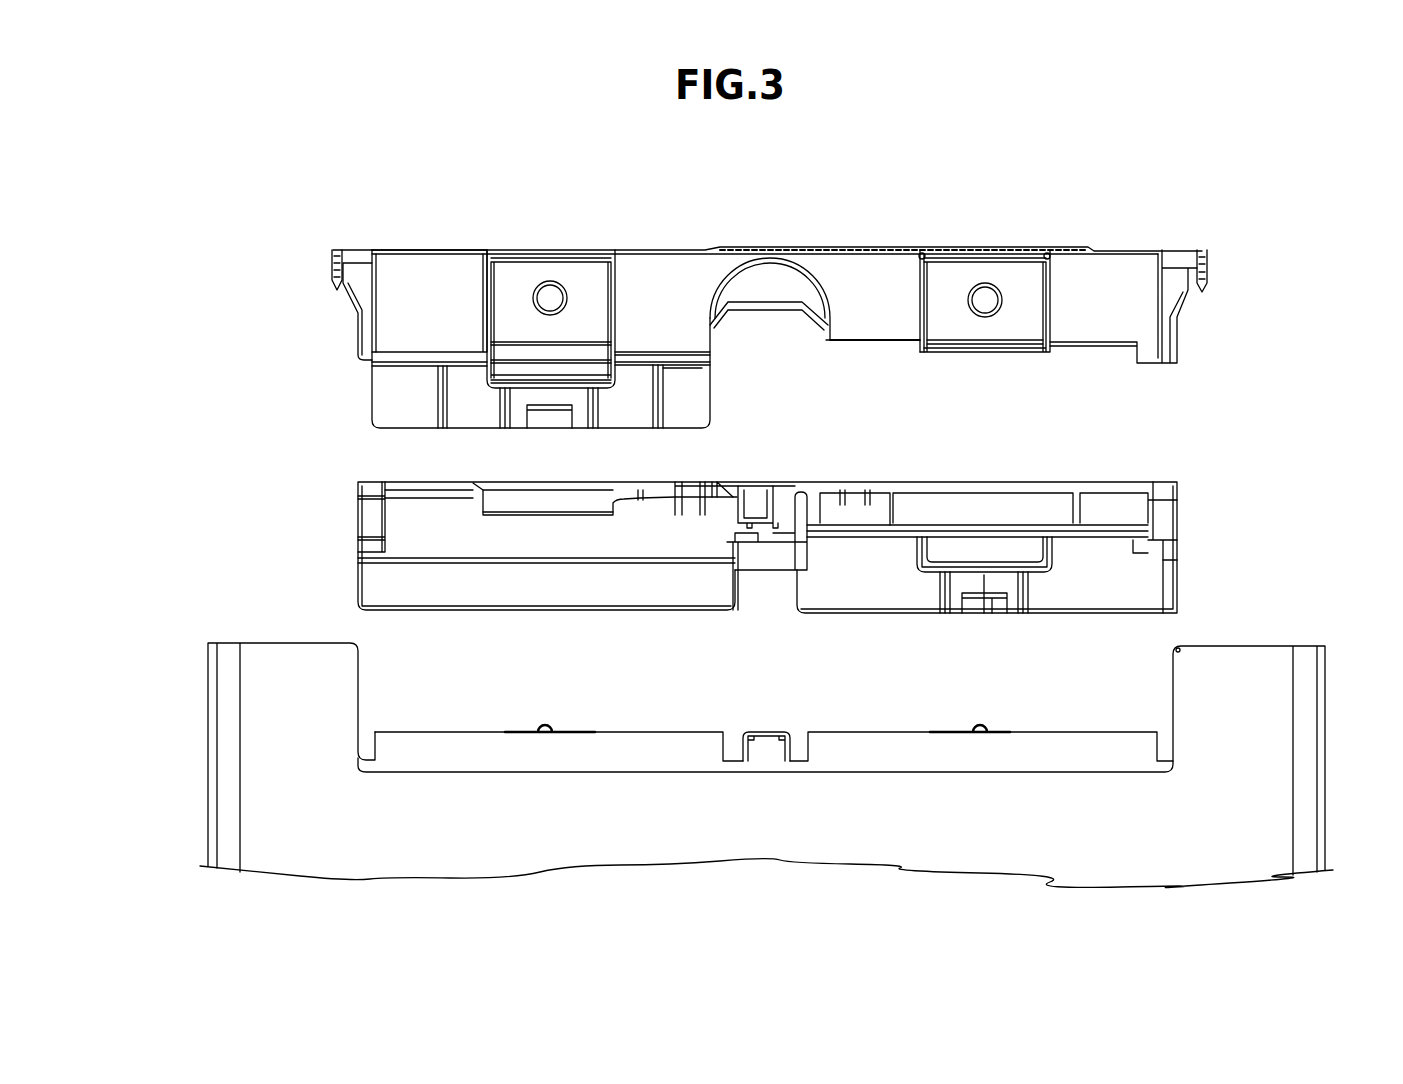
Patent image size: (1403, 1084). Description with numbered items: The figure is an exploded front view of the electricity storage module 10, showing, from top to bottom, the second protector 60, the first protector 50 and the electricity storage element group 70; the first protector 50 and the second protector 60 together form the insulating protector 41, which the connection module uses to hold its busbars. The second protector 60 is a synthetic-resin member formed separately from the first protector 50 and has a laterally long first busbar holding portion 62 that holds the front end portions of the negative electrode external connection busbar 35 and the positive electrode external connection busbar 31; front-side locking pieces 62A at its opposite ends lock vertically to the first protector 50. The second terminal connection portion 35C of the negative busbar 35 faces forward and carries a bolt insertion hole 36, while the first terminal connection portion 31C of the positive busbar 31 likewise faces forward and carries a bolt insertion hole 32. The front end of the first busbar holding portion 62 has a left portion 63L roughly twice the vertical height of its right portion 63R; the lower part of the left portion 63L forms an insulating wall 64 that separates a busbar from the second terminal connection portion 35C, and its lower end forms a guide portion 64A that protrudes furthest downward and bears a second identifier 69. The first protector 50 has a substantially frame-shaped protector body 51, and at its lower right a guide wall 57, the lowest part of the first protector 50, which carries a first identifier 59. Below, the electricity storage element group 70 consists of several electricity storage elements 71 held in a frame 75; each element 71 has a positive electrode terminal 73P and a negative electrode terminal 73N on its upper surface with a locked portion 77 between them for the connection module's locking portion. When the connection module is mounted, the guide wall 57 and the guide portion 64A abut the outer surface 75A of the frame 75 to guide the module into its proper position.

The electricity storage module 10 is at (146, 283).
The insulating protector 41 is at (230, 315).
The second protector 60 is at (302, 330).
The first protector 50 is at (302, 513).
The electricity storage element group 70 is at (197, 723).
The left portion 63L is at (413, 283).
The second terminal connection portion 35C is at (512, 285).
The bolt insertion hole 36 is at (550, 292).
The negative electrode external connection busbar 35 is at (596, 234).
The right portion 63R is at (862, 287).
The first terminal connection portion 31C is at (947, 287).
The bolt insertion hole 32 is at (985, 293).
The positive electrode external connection busbar 31 is at (1028, 232).
The first busbar holding portion 62 is at (1122, 282).
The front-side locking piece 62A is at (1240, 283).
The insulating wall 64 is at (697, 387).
The guide portion 64A is at (623, 418).
The second identifier 69 is at (548, 412).
The protector body 51 is at (1110, 488).
The guide wall 57 is at (1142, 583).
The first identifier 59 is at (990, 617).
The frame 75 is at (290, 665).
The electricity storage element 71 is at (418, 750).
The locked portion 77 is at (790, 748).
The negative electrode terminal 73N is at (545, 718).
The positive electrode terminal 73P is at (980, 718).
The outer surface 75A is at (1247, 758).